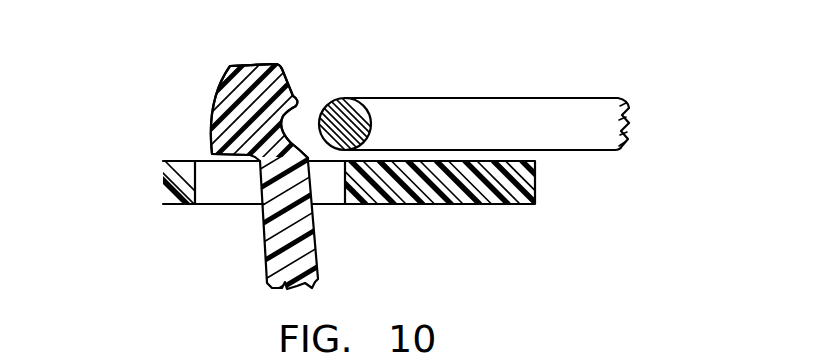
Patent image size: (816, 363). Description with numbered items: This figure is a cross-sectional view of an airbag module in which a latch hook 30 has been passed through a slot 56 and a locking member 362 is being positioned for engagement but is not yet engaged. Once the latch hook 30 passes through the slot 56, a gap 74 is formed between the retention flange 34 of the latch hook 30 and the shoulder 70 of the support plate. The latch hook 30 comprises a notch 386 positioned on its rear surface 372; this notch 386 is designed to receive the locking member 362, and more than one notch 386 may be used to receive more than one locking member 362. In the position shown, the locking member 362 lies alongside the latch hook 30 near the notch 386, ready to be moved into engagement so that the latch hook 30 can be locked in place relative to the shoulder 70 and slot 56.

The latch hook 30 is at (300, 242).
The retention flange 34 is at (238, 115).
The slot 56 is at (313, 153).
The shoulder 70 is at (178, 178).
The gap 74 is at (200, 144).
The locking member 362 is at (462, 113).
The rear surface 372 is at (288, 86).
The notch 386 is at (302, 110).